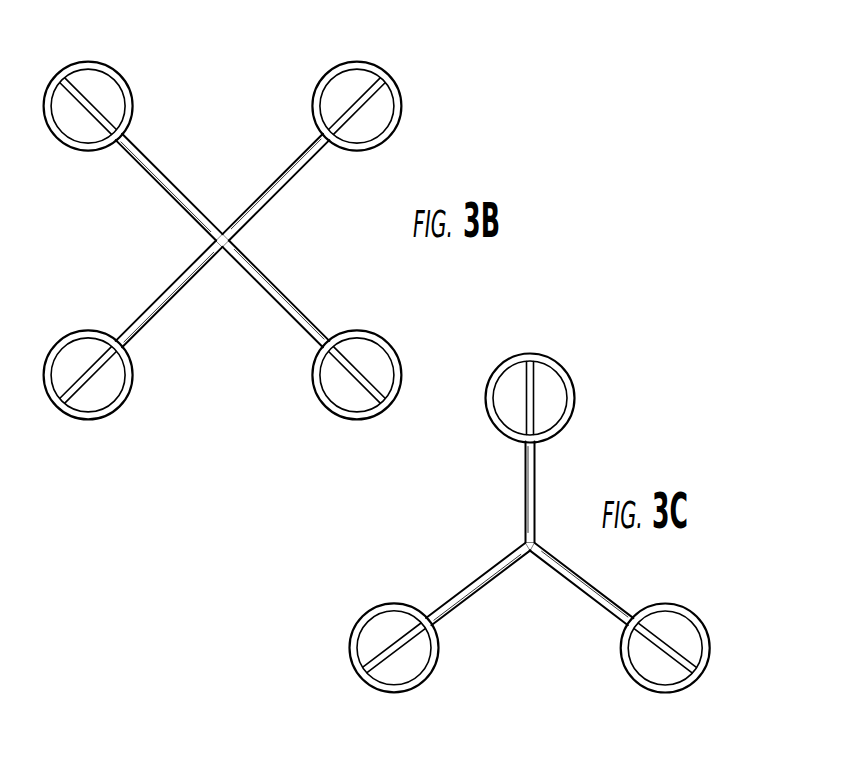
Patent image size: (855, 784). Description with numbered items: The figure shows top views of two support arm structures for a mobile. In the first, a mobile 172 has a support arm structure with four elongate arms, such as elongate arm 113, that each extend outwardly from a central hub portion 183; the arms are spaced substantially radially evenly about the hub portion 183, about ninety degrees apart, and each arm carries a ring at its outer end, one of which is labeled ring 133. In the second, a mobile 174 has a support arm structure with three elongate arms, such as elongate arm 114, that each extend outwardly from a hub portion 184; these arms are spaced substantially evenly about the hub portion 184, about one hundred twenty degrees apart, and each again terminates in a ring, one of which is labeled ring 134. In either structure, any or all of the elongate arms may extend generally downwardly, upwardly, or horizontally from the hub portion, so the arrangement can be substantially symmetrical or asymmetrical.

In FIG. 3B, the mobile 172 is at (225, 88).
In FIG. 3B, the ring 133 is at (378, 68).
In FIG. 3B, the elongate arm 113 is at (273, 192).
In FIG. 3B, the hub portion 183 is at (222, 253).
In FIG. 3C, the mobile 174 is at (658, 393).
In FIG. 3C, the ring 134 is at (565, 385).
In FIG. 3C, the elongate arm 114 is at (535, 472).
In FIG. 3C, the hub portion 184 is at (530, 568).